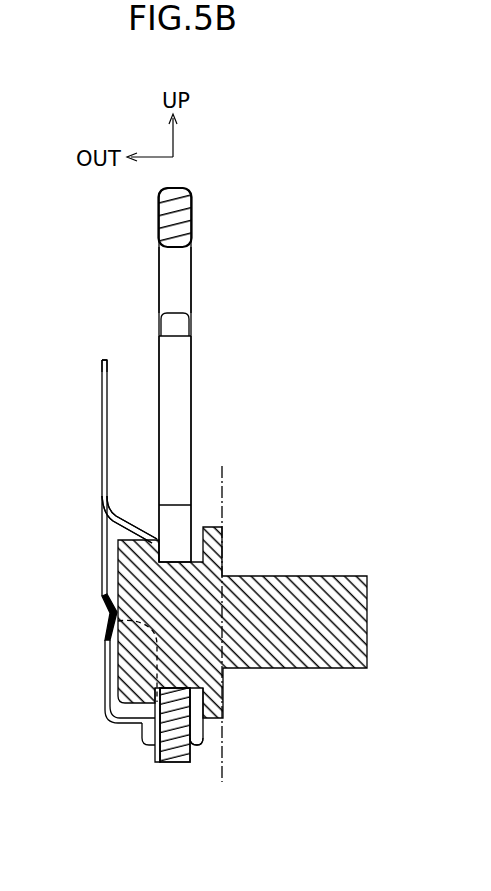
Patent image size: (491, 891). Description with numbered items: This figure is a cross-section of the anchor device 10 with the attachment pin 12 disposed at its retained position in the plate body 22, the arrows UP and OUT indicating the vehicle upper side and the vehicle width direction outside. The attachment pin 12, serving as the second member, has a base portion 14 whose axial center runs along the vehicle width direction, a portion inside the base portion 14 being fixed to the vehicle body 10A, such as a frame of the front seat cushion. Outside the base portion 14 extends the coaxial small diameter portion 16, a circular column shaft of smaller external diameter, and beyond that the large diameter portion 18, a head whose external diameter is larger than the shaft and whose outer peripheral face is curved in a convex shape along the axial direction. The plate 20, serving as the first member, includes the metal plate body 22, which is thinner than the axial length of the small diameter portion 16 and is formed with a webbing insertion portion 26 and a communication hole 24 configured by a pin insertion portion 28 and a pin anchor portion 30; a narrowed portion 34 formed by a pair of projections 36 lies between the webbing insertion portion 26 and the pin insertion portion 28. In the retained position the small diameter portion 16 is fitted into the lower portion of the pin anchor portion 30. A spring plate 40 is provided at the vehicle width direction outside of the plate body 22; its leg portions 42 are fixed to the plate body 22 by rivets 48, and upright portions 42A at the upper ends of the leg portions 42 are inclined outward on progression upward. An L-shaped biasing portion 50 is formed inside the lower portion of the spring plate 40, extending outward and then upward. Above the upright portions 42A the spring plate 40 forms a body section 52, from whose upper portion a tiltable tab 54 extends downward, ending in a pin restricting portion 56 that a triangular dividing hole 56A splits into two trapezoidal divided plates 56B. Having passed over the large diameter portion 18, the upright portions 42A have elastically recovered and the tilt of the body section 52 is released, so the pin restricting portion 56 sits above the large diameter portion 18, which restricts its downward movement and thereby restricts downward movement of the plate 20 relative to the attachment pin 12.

The anchor device 10 is at (117, 250).
The vehicle body 10A is at (222, 470).
The attachment pin 12 is at (327, 573).
The base portion 14 is at (214, 719).
The small diameter portion 16 is at (193, 726).
The large diameter portion 18 is at (145, 736).
The plate 20 is at (193, 187).
The plate body 22 is at (193, 215).
The communication hole 24 is at (172, 399).
The webbing insertion portion 26 is at (159, 284).
The pin insertion portion 28 is at (181, 358).
The pin anchor portion 30 is at (181, 515).
The narrowed portion 34 is at (175, 324).
The projections 36 is at (189, 325).
The spring plate 40 is at (99, 404).
The leg portions 42 is at (155, 742).
The upright portions 42A is at (118, 624).
The rivets 48 is at (198, 746).
The biasing portion 50 is at (103, 701).
The body section 52 is at (104, 360).
The tiltable tab 54 is at (102, 440).
The pin restricting portion 56 is at (116, 527).
The dividing hole 56A is at (105, 506).
The divided plates 56B is at (112, 542).